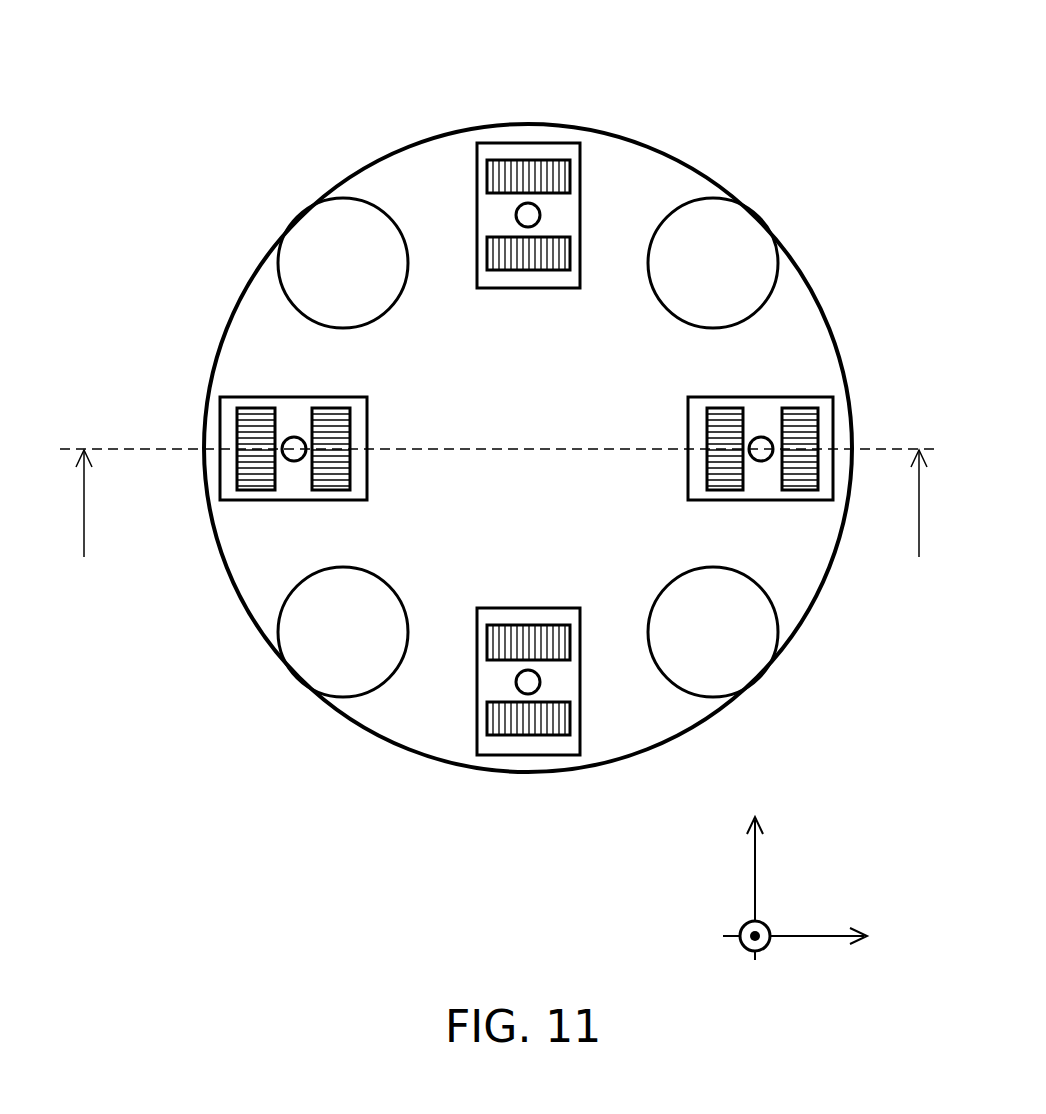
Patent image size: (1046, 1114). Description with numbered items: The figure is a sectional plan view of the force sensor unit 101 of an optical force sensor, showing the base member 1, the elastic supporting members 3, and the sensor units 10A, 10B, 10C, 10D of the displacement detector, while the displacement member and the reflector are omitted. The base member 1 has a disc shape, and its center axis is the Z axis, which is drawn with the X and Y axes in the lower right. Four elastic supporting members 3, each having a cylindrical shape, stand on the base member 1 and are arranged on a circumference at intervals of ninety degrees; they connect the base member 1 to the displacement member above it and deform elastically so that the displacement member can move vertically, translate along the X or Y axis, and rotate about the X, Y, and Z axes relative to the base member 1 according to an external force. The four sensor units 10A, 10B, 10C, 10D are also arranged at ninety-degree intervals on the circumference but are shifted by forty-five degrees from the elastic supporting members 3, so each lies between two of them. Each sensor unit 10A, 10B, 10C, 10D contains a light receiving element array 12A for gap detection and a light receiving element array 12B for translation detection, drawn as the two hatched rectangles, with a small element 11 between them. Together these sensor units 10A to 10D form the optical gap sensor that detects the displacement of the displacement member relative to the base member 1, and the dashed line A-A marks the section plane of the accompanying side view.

The force sensor unit 101 is at (873, 41).
The base member 1 is at (262, 266).
The elastic supporting member 3 is at (343, 198).
The sensor unit 10A is at (283, 397).
The sensor unit 10B is at (487, 143).
The sensor unit 10C is at (833, 397).
The sensor unit 10D is at (560, 755).
The positioning pin hole 11 is at (517, 210).
The light receiving element array for gap detection 12A is at (570, 164).
The light receiving element array for translation detection 12B is at (580, 246).